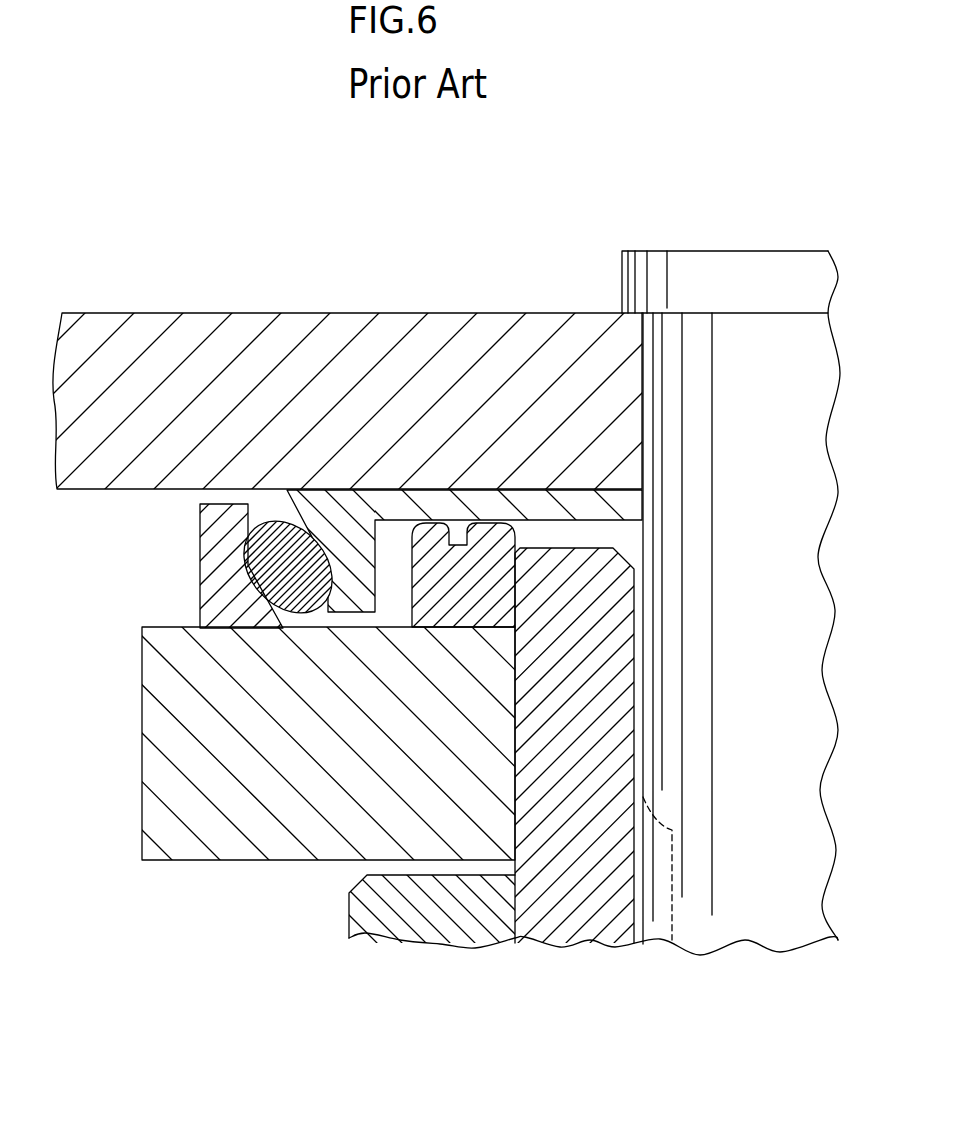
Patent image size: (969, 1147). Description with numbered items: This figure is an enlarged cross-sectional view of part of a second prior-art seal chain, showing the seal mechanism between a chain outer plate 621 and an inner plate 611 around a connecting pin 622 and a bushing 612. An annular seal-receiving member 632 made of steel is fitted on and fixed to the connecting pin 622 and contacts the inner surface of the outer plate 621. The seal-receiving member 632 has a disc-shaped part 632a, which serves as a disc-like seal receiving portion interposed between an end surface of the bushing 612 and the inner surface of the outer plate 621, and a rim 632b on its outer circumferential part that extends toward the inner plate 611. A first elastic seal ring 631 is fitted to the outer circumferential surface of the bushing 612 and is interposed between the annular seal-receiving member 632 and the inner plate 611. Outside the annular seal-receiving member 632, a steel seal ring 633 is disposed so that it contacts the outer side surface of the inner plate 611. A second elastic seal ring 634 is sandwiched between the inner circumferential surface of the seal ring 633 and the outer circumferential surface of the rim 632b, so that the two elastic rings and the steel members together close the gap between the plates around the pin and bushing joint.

The inner plate 611 is at (157, 738).
The bushing 612 is at (573, 930).
The outer plate 621 is at (410, 313).
The connecting pin 622 is at (752, 273).
The first elastic seal ring 631 is at (423, 613).
The annular seal-receiving member 632 is at (368, 560).
The disc-shaped part 632a is at (300, 558).
The rim 632b is at (352, 582).
The seal ring 633 is at (215, 536).
The second elastic seal ring 634 is at (513, 503).